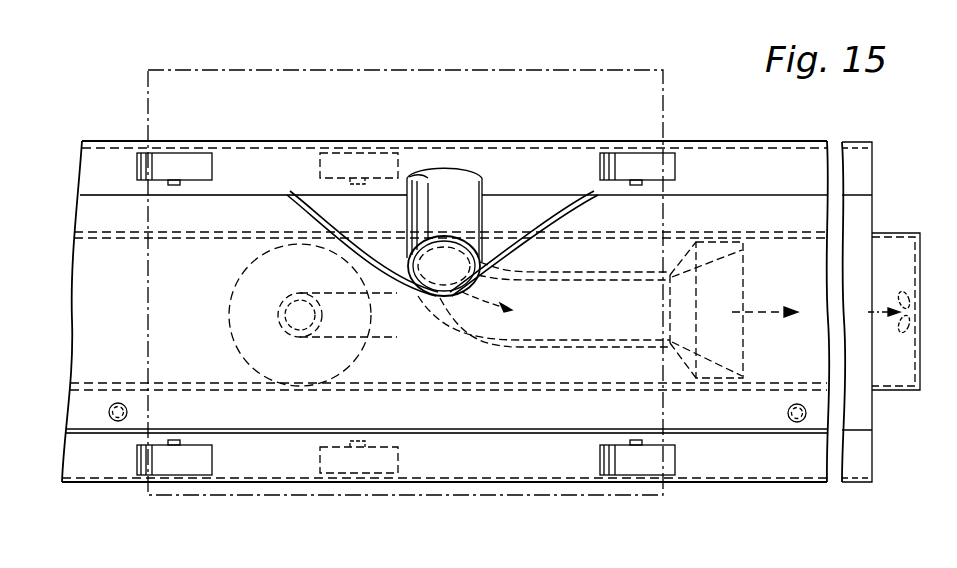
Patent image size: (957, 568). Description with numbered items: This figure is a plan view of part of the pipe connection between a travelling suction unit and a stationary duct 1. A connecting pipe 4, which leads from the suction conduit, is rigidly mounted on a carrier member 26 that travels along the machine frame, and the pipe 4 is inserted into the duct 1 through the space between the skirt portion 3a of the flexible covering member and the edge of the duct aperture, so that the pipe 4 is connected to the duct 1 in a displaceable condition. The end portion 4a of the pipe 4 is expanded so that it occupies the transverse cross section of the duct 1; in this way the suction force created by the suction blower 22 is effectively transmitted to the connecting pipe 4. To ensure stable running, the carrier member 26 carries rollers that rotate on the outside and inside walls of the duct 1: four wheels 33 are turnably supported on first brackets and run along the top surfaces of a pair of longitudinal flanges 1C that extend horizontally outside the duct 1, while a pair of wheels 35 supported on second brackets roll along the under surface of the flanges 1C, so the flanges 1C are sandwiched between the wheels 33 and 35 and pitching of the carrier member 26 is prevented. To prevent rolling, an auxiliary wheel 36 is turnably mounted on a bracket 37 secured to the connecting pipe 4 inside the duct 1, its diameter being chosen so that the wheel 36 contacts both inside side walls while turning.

The duct 1 is at (93, 346).
The longitudinal flanges 1C is at (100, 182).
The skirt portion 3a is at (546, 216).
The connecting pipe 4 is at (450, 180).
The end portion 4a is at (718, 242).
The suction blower 22 is at (915, 314).
The carrier member 26 is at (712, 66).
The wheels 33 is at (180, 161).
The wheels 35 is at (345, 165).
The auxiliary wheel 36 is at (245, 332).
The bracket 37 is at (433, 342).